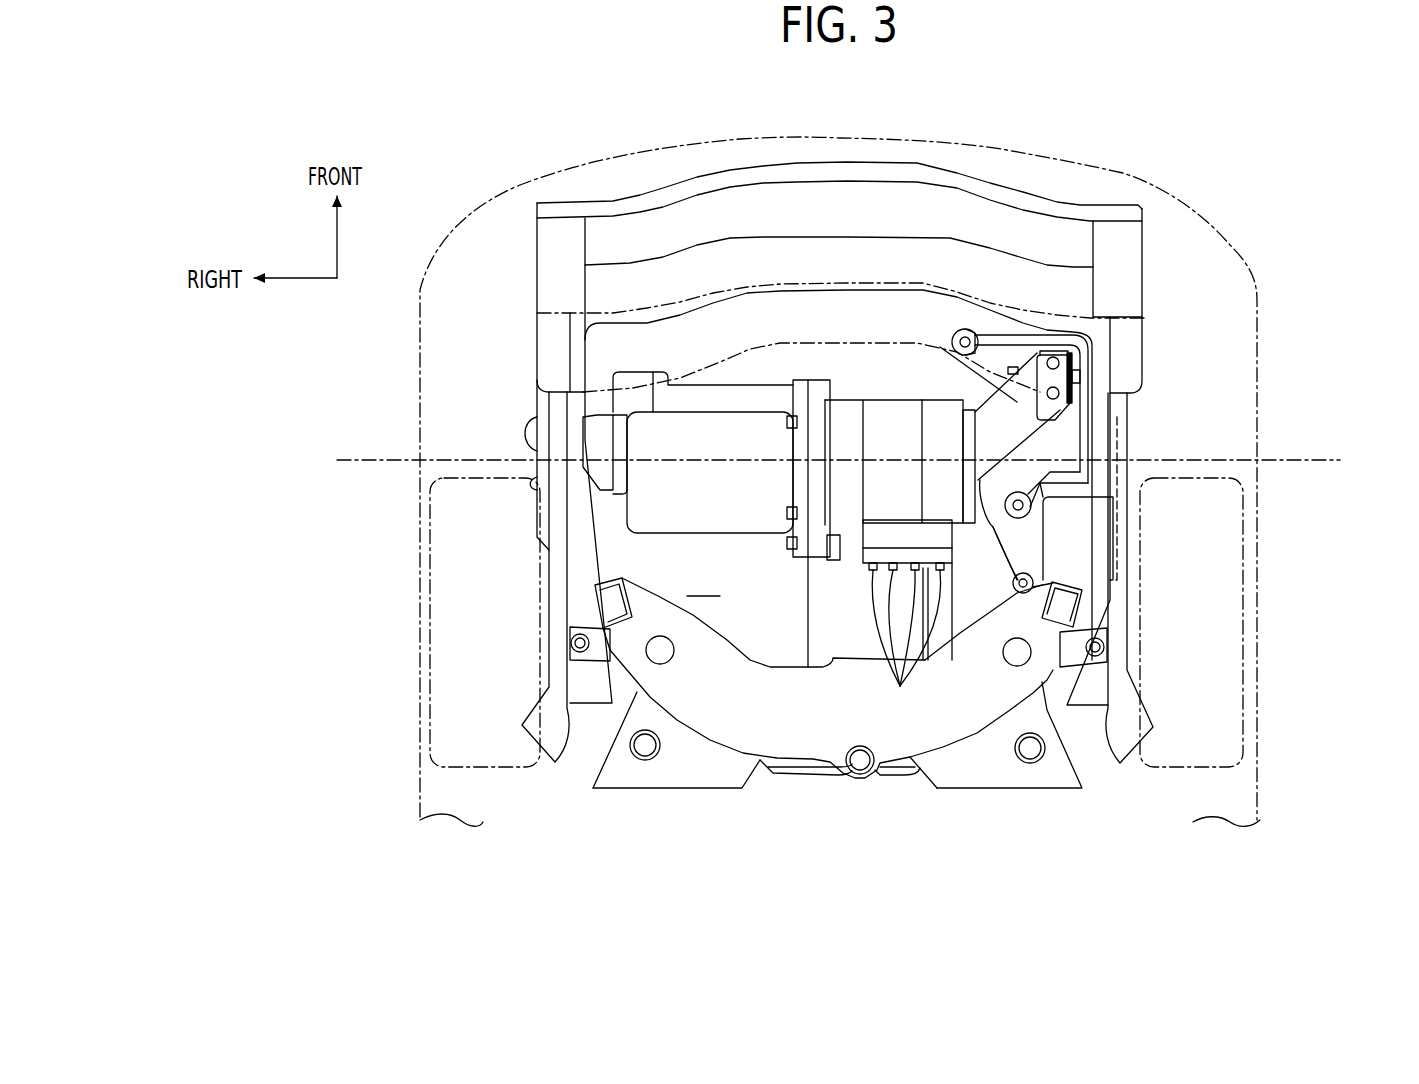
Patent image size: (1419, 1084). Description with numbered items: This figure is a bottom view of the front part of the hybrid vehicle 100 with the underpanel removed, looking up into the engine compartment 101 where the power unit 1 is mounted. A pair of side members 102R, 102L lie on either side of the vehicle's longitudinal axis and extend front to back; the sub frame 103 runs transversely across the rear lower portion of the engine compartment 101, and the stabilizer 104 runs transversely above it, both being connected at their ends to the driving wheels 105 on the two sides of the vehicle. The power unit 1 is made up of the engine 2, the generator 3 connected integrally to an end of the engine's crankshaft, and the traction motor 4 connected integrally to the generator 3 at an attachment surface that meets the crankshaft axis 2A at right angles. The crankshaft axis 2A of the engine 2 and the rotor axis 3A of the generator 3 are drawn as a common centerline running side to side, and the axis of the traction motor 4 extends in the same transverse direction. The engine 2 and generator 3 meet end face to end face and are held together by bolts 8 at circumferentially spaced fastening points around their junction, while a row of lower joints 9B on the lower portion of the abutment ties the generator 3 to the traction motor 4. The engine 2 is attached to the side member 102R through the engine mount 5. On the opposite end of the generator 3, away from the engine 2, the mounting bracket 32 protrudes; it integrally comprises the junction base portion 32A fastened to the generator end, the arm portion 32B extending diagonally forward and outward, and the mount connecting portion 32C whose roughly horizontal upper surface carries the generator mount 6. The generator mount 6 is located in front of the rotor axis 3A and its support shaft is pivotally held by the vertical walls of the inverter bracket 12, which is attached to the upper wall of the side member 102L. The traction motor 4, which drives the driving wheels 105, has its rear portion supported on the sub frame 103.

The power unit 1 is at (817, 362).
The engine 2 is at (748, 380).
The generator 3 is at (937, 398).
The traction motor 4 is at (803, 622).
The engine mount 5 is at (521, 431).
The generator mount 6 is at (1076, 357).
The bolts 8 is at (787, 514).
The lower joints 9B is at (900, 684).
The inverter bracket 12 is at (1013, 340).
The mounting bracket 32 is at (1035, 444).
The junction base portion 32A is at (973, 513).
The arm portion 32B is at (1015, 403).
The mount connecting portion 32C is at (1050, 408).
The hybrid vehicle 100 is at (1252, 207).
The engine compartment 101 is at (842, 433).
The side member 102R is at (553, 577).
The side member 102L is at (1120, 600).
The sub frame 103 is at (742, 712).
The stabilizer 104 is at (787, 773).
The driving wheels 105 is at (430, 675).
The crankshaft axis 2A is at (378, 455).
The rotor axis 3A is at (1300, 455).